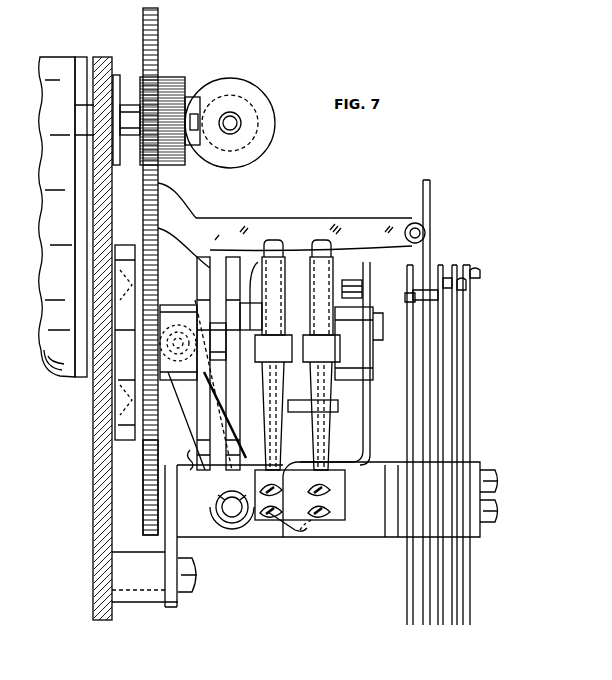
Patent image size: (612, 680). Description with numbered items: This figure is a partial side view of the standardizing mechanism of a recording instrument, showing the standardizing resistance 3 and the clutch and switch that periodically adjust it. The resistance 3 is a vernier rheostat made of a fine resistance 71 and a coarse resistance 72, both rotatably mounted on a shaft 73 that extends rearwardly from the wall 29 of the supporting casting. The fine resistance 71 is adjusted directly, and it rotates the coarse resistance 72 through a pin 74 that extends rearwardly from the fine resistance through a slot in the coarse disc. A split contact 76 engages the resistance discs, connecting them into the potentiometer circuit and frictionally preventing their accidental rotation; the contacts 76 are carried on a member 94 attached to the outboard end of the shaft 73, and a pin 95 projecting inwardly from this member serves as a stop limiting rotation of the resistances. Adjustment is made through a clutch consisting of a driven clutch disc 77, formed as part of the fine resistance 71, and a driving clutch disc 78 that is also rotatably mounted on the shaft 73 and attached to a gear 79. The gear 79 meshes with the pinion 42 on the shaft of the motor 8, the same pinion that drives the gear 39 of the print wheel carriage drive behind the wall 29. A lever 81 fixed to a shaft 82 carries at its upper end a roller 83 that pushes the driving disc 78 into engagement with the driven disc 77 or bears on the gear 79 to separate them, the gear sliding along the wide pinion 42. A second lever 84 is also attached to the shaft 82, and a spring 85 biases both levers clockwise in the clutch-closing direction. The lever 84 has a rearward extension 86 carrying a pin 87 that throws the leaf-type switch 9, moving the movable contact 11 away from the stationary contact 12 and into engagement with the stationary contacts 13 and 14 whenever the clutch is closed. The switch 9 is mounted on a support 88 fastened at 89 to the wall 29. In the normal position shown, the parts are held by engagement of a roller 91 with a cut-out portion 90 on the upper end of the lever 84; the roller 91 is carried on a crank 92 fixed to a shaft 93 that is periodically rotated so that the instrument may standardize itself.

The standardizing resistance 3 is at (302, 232).
The motor 8 is at (60, 62).
The switch 9 is at (480, 367).
The movable contact 11 is at (420, 290).
The stationary contact 12 is at (412, 296).
The stationary contact 13 is at (457, 280).
The stationary contact 14 is at (472, 270).
The wall 29 is at (97, 497).
The gear 39 is at (143, 35).
The pinion 42 is at (186, 79).
The fine resistance 71 is at (272, 243).
The coarse resistance 72 is at (320, 243).
The shaft 73 is at (220, 323).
The pin 74 is at (338, 410).
The split contact 76 is at (280, 447).
The driven clutch disc 77 is at (236, 257).
The driving clutch disc 78 is at (205, 257).
The gear 79 is at (152, 474).
The lever 81 is at (190, 428).
The shaft 82 is at (228, 525).
The roller 83 is at (178, 325).
The second lever 84 is at (165, 186).
The spring 85 is at (282, 522).
The extension 86 is at (362, 218).
The pin 87 is at (414, 223).
The support 88 is at (365, 530).
The fastening 89 is at (145, 603).
The cut-out portion 90 is at (163, 77).
The roller 91 is at (200, 95).
The crank 92 is at (250, 93).
The shaft 93 is at (242, 121).
The member 94 is at (370, 400).
The pin 95 is at (355, 280).